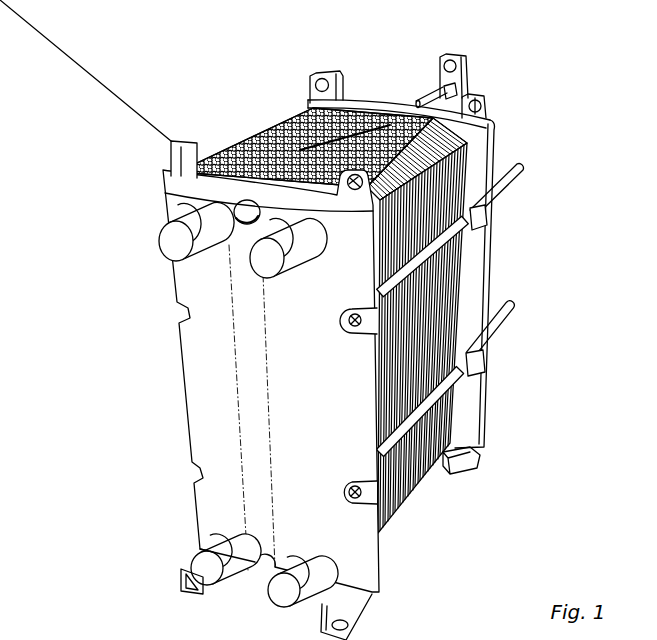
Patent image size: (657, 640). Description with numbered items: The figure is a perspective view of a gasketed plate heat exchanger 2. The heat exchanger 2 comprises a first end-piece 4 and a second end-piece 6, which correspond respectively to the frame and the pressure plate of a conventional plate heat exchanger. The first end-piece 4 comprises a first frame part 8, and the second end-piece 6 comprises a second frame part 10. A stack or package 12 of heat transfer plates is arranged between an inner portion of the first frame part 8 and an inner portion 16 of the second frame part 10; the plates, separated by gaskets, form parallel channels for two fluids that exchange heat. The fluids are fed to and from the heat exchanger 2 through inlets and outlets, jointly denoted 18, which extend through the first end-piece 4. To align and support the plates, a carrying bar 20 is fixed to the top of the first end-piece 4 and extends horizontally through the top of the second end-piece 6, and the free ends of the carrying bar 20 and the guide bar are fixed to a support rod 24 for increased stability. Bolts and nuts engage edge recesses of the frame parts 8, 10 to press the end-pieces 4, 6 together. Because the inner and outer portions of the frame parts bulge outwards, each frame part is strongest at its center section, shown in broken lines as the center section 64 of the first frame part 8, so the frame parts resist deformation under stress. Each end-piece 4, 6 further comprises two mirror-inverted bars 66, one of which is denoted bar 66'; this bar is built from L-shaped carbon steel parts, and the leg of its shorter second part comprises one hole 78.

The gasketed plate heat exchanger 2 is at (608, 94).
The first end-piece 4 is at (143, 498).
The second end-piece 6 is at (525, 326).
The first frame part 8 is at (205, 370).
The second frame part 10 is at (473, 240).
The stack or package of heat transfer plates 12 is at (263, 147).
The inner portion of the second frame part 16 is at (308, 107).
The inlets and outlets 18 is at (177, 243).
The carrying bar 20 is at (428, 97).
The support rod 24 is at (472, 65).
The center section of the first frame part 64 is at (260, 517).
The bars 66 is at (530, 132).
The bar 66' is at (98, 89).
The hole 78 is at (180, 577).